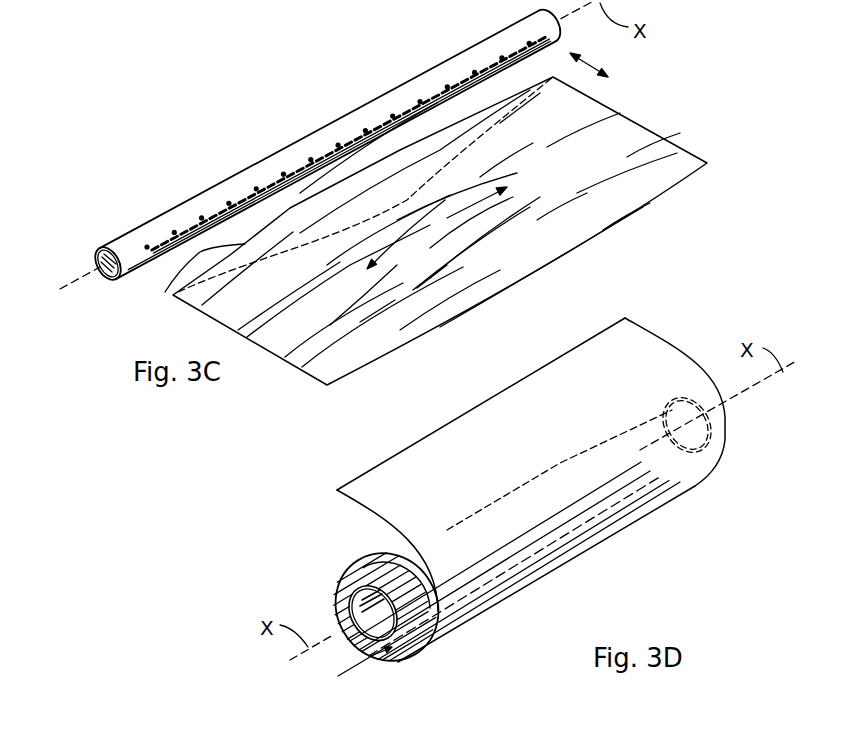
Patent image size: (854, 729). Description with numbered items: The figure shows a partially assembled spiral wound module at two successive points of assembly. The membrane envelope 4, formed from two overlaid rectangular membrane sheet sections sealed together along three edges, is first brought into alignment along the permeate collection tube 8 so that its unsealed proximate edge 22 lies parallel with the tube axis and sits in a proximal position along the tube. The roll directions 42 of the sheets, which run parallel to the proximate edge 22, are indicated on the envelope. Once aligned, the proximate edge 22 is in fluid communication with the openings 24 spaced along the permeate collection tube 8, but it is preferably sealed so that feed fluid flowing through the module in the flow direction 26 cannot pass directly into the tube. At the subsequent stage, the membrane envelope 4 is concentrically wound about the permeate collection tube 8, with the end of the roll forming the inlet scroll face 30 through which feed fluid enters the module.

In FIG. 3C, the membrane envelope 4 is at (637, 137).
In FIG. 3D, the membrane envelope 4 is at (650, 353).
In FIG. 3C, the permeate collection tube 8 is at (140, 226).
In FIG. 3D, the permeate collection tube 8 is at (383, 580).
In FIG. 3C, the proximate edge 22 is at (165, 292).
In FIG. 3D, the proximate edge 22 is at (433, 590).
In FIG. 3C, the openings 24 is at (418, 100).
In FIG. 3D, the flow direction of feed fluid 26 is at (353, 671).
In FIG. 3D, the inlet scroll face 30 is at (333, 590).
In FIG. 3C, the roll directions 42 is at (445, 218).